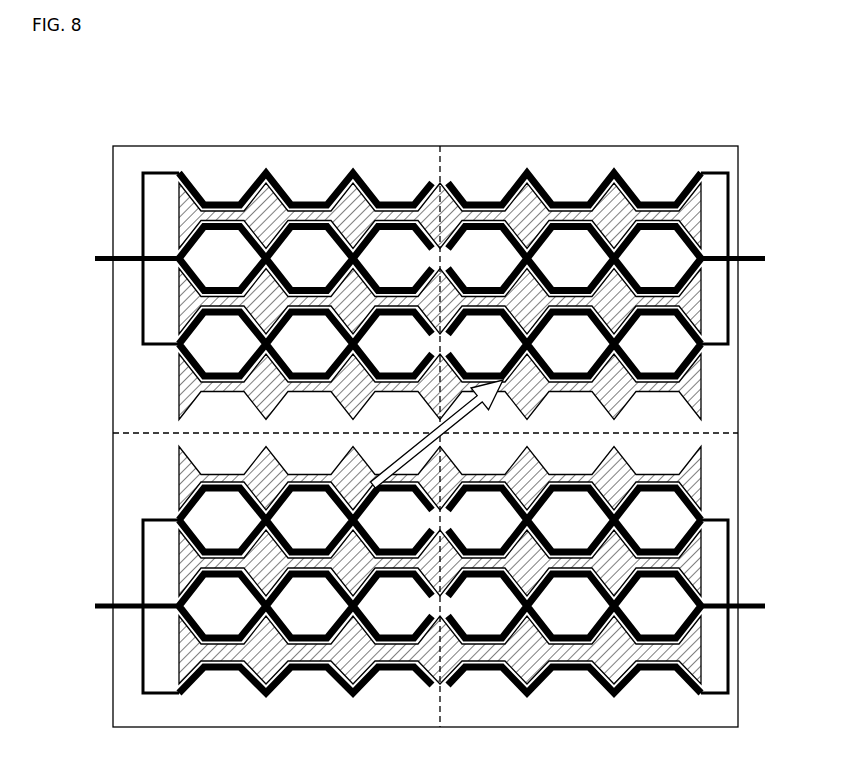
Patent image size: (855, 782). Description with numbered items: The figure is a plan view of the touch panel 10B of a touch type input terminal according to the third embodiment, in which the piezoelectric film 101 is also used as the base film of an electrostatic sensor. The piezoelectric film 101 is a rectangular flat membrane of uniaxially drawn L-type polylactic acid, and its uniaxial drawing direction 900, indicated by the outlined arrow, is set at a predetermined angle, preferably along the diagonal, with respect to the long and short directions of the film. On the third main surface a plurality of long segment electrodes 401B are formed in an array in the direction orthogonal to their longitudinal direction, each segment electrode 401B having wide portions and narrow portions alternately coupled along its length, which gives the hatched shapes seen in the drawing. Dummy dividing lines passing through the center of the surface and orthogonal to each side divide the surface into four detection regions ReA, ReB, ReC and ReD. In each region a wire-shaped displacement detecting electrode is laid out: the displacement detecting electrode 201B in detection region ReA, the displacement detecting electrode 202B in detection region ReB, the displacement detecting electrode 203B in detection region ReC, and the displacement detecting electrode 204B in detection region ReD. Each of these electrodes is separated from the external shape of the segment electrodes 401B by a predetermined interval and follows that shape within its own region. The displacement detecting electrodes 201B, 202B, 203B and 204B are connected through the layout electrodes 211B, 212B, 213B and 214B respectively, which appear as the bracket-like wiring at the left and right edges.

The touch panel 10B is at (122, 78).
The piezoelectric film 101 is at (383, 158).
The uniaxial drawing direction 900 is at (398, 447).
The segment electrode 401B is at (257, 364).
The displacement detecting electrode 202B is at (185, 180).
The displacement detecting electrode 201B is at (703, 180).
The displacement detecting electrode 203B is at (180, 513).
The displacement detecting electrode 204B is at (700, 513).
The layout electrode 212B is at (143, 172).
The layout electrode 211B is at (728, 172).
The layout electrode 213B is at (143, 693).
The layout electrode 214B is at (728, 697).
The detection region ReB is at (139, 154).
The detection region ReA is at (593, 161).
The detection region ReC is at (375, 724).
The detection region ReD is at (588, 724).